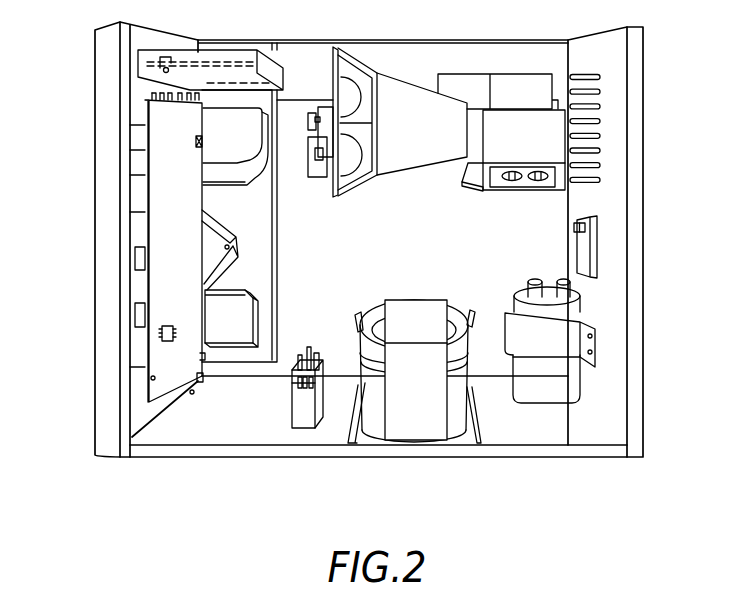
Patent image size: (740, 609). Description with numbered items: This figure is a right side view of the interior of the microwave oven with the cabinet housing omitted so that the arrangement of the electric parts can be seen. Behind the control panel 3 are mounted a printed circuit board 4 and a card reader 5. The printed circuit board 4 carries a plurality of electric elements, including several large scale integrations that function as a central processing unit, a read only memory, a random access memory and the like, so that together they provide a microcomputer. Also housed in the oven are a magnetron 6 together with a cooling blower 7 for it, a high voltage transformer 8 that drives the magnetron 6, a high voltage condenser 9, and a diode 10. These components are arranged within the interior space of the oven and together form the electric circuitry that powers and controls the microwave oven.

The control panel 3 is at (103, 140).
The printed circuit board 4 is at (150, 379).
The card reader 5 is at (228, 57).
The magnetron 6 is at (515, 83).
The horn loudspeaker 7 is at (368, 65).
The high voltage transformer 8 is at (420, 430).
The high voltage condenser 9 is at (553, 393).
The diode 10 is at (595, 243).